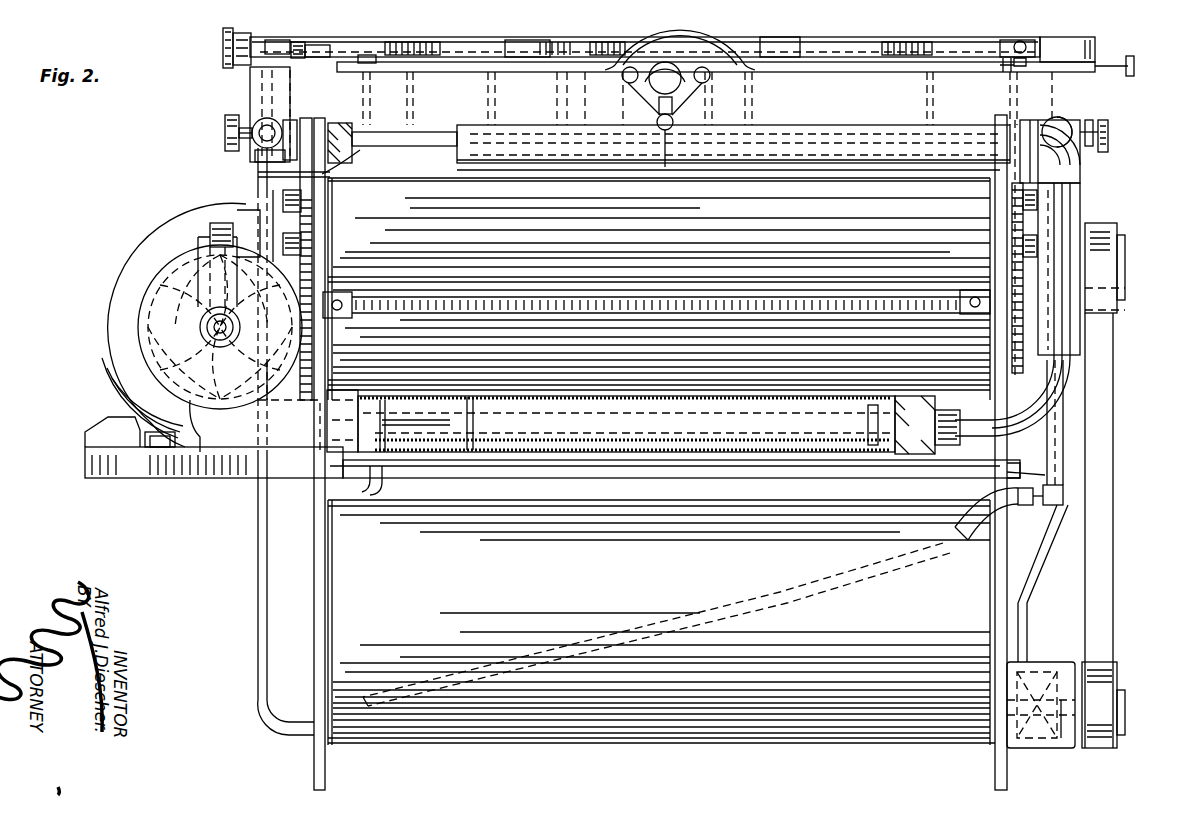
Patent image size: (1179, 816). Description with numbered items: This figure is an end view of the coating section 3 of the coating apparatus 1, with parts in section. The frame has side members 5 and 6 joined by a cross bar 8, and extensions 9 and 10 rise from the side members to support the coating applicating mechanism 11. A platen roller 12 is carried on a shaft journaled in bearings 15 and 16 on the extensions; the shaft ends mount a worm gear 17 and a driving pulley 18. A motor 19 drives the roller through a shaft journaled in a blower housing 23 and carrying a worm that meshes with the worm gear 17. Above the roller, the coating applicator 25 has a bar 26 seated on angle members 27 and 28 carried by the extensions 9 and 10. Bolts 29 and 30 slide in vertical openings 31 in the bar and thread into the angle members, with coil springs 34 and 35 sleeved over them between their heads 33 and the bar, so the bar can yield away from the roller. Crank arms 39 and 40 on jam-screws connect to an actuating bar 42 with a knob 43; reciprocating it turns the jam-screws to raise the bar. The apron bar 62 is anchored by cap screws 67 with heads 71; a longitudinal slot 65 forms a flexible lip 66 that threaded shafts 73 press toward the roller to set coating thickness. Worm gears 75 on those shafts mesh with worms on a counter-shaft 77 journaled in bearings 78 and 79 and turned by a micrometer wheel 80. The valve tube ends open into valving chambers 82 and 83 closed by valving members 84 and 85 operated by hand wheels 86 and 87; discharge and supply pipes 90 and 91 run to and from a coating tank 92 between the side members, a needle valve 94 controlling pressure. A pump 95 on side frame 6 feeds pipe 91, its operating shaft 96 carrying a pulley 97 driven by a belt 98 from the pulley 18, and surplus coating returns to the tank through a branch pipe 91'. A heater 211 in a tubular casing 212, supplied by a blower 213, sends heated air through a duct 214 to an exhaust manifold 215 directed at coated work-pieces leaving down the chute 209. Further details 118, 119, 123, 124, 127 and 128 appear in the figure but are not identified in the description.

The coating apparatus 1 is at (262, 202).
The coating section 3 is at (250, 104).
The side member 5 is at (325, 772).
The side member 6 is at (1007, 778).
The cross bar 8 is at (455, 480).
The extension 9 is at (300, 378).
The extension 10 is at (1000, 450).
The coating applicating mechanism 11 is at (283, 192).
The platen roller 12 is at (955, 435).
The bearing 15 is at (240, 210).
The bearing 16 is at (1080, 218).
The worm gear 17 is at (212, 232).
The driving pulley 18 is at (1117, 226).
The motor 19 is at (100, 340).
The blower housing 23 is at (125, 372).
The coating applicator 25 is at (440, 60).
The bar 26 is at (462, 80).
The angle member 27 is at (255, 158).
The angle member 28 is at (1008, 180).
The bolt 29 is at (322, 50).
The bolt 30 is at (1030, 33).
The vertical openings 31 is at (275, 74).
The heads 33 is at (298, 45).
The coil spring 34 is at (285, 45).
The coil spring 35 is at (1005, 48).
The crank arm 39 is at (365, 55).
The crank arm 40 is at (1008, 72).
The actuating bar 42 is at (815, 72).
The knob 43 is at (1134, 65).
The bar 62 is at (455, 128).
The longitudinal slot 65 is at (425, 133).
The flexible lip 66 is at (396, 133).
The cap screws 67 is at (522, 60).
The heads 71 is at (502, 60).
The threaded shafts 73 is at (422, 42).
The worm gears 75 is at (636, 42).
The counter-shaft 77 is at (845, 48).
The bearing 78 is at (252, 36).
The bearing 79 is at (1048, 42).
The wheel 80 is at (223, 34).
The valving chamber 82 is at (300, 135).
The valving chamber 83 is at (1030, 128).
The valving member 84 is at (225, 140).
The valving member 85 is at (1100, 120).
The hand wheel 86 is at (225, 120).
The hand wheel 87 is at (1108, 132).
The discharge pipe 90 is at (265, 118).
The supply pipe 91 is at (1080, 511).
The branch pipe 91' is at (690, 597).
The coating containing tank 92 is at (665, 742).
The needle valve 94 is at (1068, 125).
The pump 95 is at (1070, 665).
The operating shaft 96 is at (1062, 715).
The pulley 97 is at (1117, 745).
The belt 98 is at (1113, 395).
The link 118 is at (700, 92).
The pivot ring 119 is at (678, 62).
The block 123 is at (658, 108).
The link 124 is at (640, 95).
The pivot 127 is at (690, 115).
The rod 128 is at (666, 150).
The chute 209 is at (945, 290).
The heater 211 is at (815, 445).
The tubular casing 212 is at (865, 445).
The blower 213 is at (145, 315).
The duct 214 is at (1075, 348).
The exhaust manifold 215 is at (905, 160).